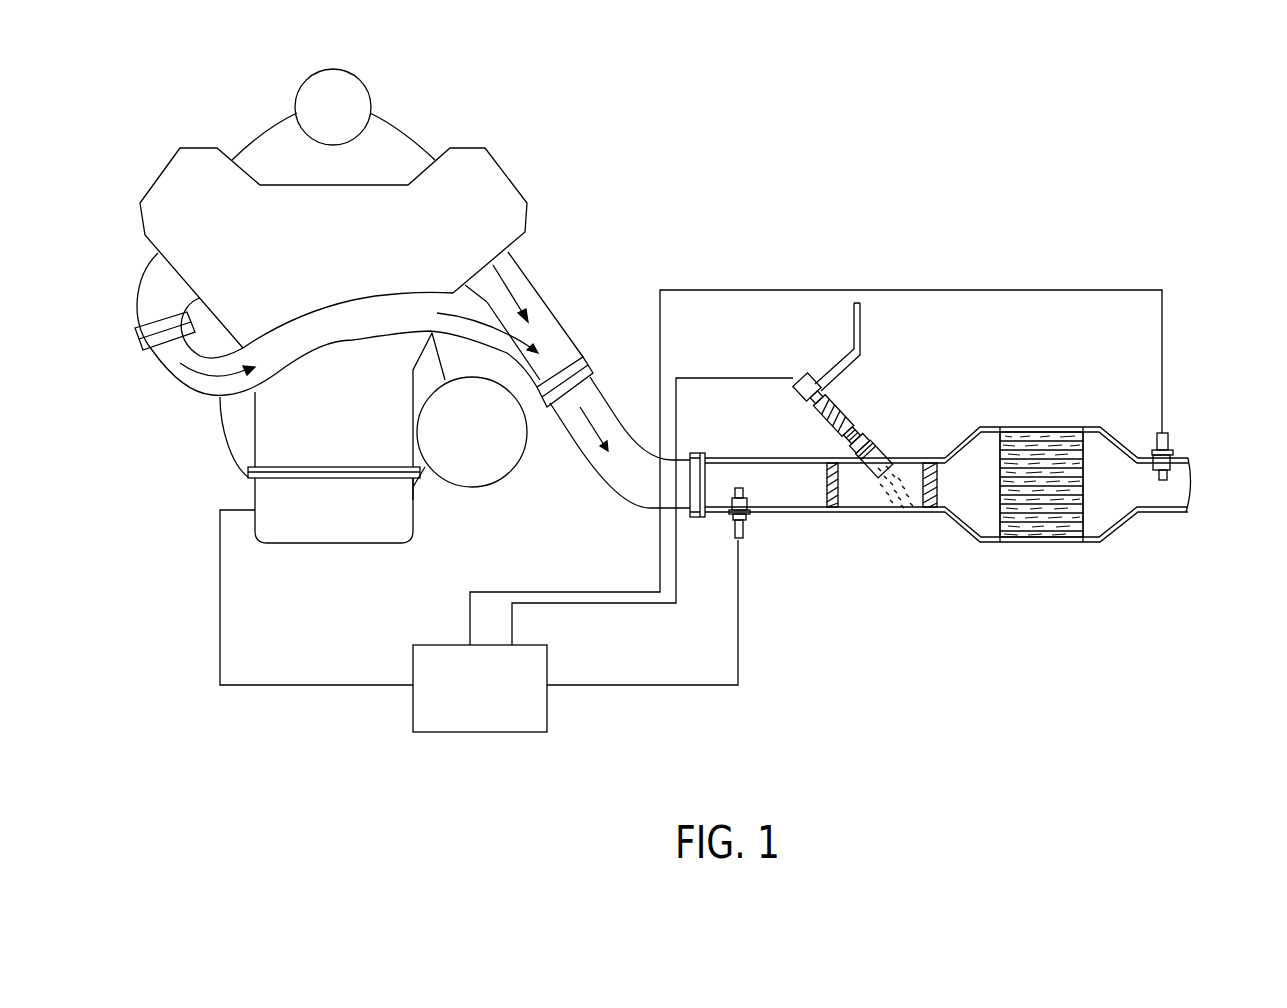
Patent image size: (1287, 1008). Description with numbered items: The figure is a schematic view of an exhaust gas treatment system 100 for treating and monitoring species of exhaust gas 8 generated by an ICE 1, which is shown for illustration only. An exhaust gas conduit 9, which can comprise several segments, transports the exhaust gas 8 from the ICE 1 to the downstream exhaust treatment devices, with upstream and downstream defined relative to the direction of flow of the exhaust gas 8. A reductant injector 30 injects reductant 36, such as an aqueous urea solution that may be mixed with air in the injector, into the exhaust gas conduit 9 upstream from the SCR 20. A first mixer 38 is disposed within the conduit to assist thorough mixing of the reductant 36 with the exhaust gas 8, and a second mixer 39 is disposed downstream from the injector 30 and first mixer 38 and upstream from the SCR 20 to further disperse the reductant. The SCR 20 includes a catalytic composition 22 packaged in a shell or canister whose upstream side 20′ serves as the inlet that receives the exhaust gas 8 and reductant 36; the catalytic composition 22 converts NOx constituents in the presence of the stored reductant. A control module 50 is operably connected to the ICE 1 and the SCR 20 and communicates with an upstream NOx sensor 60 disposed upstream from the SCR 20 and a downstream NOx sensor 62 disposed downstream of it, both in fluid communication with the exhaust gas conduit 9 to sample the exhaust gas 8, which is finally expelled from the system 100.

The ICE 1 is at (460, 147).
The exhaust gas 8 is at (590, 418).
The exhaust gas conduit 9 is at (553, 318).
The SCR 20 is at (1068, 465).
The upstream side 20′ is at (998, 540).
The catalytic composition 22 is at (1053, 443).
The reductant injector 30 is at (847, 415).
The reductant 36 is at (905, 458).
The first mixer 38 is at (823, 493).
The second mixer 39 is at (937, 487).
The control module 50 is at (437, 643).
The upstream NOx sensor 60 is at (746, 527).
The downstream NOx sensor 62 is at (1170, 437).
The exhaust gas treatment system 100 is at (1101, 256).